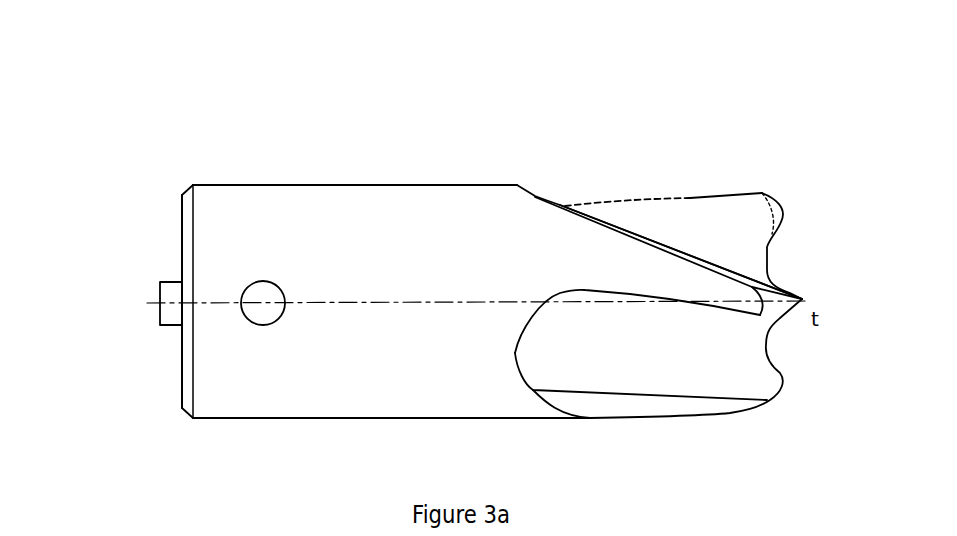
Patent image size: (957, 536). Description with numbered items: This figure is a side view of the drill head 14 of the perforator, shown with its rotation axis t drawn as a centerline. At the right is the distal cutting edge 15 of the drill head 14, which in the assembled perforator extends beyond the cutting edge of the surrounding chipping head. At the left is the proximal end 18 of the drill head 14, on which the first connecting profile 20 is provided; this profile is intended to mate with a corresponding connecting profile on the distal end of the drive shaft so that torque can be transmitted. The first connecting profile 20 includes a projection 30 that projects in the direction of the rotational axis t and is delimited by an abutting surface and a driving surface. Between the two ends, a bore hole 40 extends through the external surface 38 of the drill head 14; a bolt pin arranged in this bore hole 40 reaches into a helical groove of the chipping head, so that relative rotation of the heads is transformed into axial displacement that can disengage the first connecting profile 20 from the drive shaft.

The drill head 14 is at (561, 112).
The distal cutting edge 15 is at (680, 248).
The proximal end 18 is at (180, 217).
The first connecting profile 20 is at (122, 317).
The projection 30 is at (168, 326).
The external surface 38 is at (343, 185).
The bore hole 40 is at (263, 297).